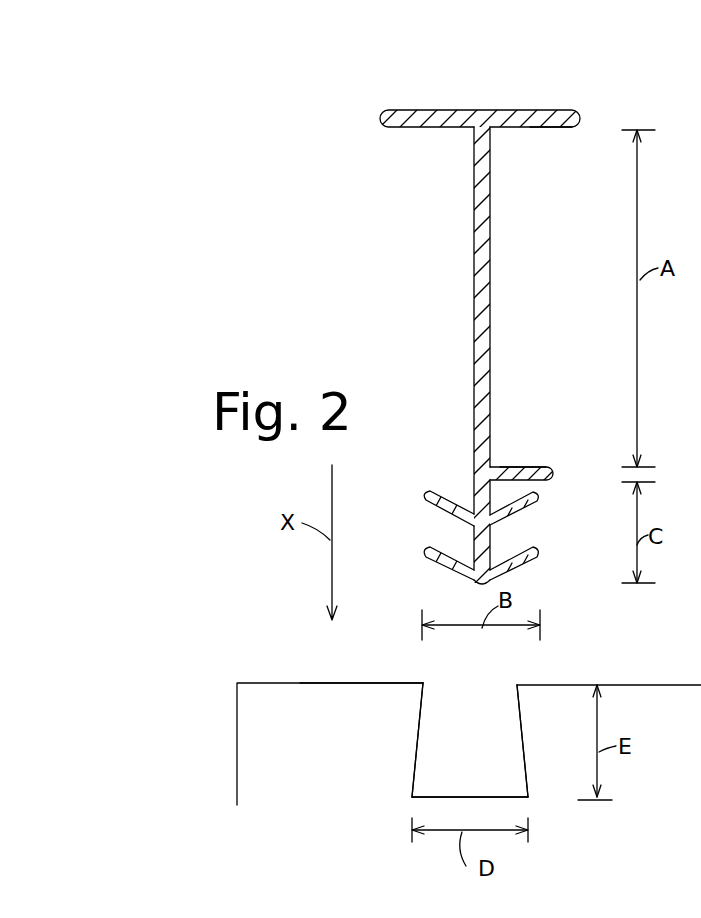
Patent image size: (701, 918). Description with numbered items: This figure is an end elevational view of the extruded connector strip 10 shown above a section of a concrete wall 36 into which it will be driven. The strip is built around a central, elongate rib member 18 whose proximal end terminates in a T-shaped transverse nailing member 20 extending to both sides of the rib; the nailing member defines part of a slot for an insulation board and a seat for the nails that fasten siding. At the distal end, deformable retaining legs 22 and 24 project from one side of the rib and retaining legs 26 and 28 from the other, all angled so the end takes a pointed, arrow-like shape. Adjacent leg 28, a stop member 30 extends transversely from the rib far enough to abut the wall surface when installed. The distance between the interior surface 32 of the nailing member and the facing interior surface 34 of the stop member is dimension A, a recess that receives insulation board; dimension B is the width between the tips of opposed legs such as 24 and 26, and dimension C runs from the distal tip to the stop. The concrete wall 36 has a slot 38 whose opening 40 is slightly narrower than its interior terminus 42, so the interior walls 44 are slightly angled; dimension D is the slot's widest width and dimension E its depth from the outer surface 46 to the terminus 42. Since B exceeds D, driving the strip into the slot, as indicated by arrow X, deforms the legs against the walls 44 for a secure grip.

The connector strip 10 is at (362, 210).
The central rib member 18 is at (478, 262).
The nailing member 20 is at (522, 120).
The retaining leg 22 is at (430, 504).
The retaining leg 24 is at (430, 556).
The retaining leg 26 is at (526, 556).
The retaining leg 28 is at (527, 504).
The stop member 30 is at (553, 474).
The interior surface of nailing member 32 is at (538, 132).
The interior surface of stop member 34 is at (540, 467).
The concrete wall 36 is at (272, 758).
The slot 38 is at (448, 692).
The opening of slot 40 is at (520, 682).
The interior terminus of slot 42 is at (412, 796).
The interior walls of slot 44 is at (418, 748).
The outer surface of concrete block 46 is at (304, 680).